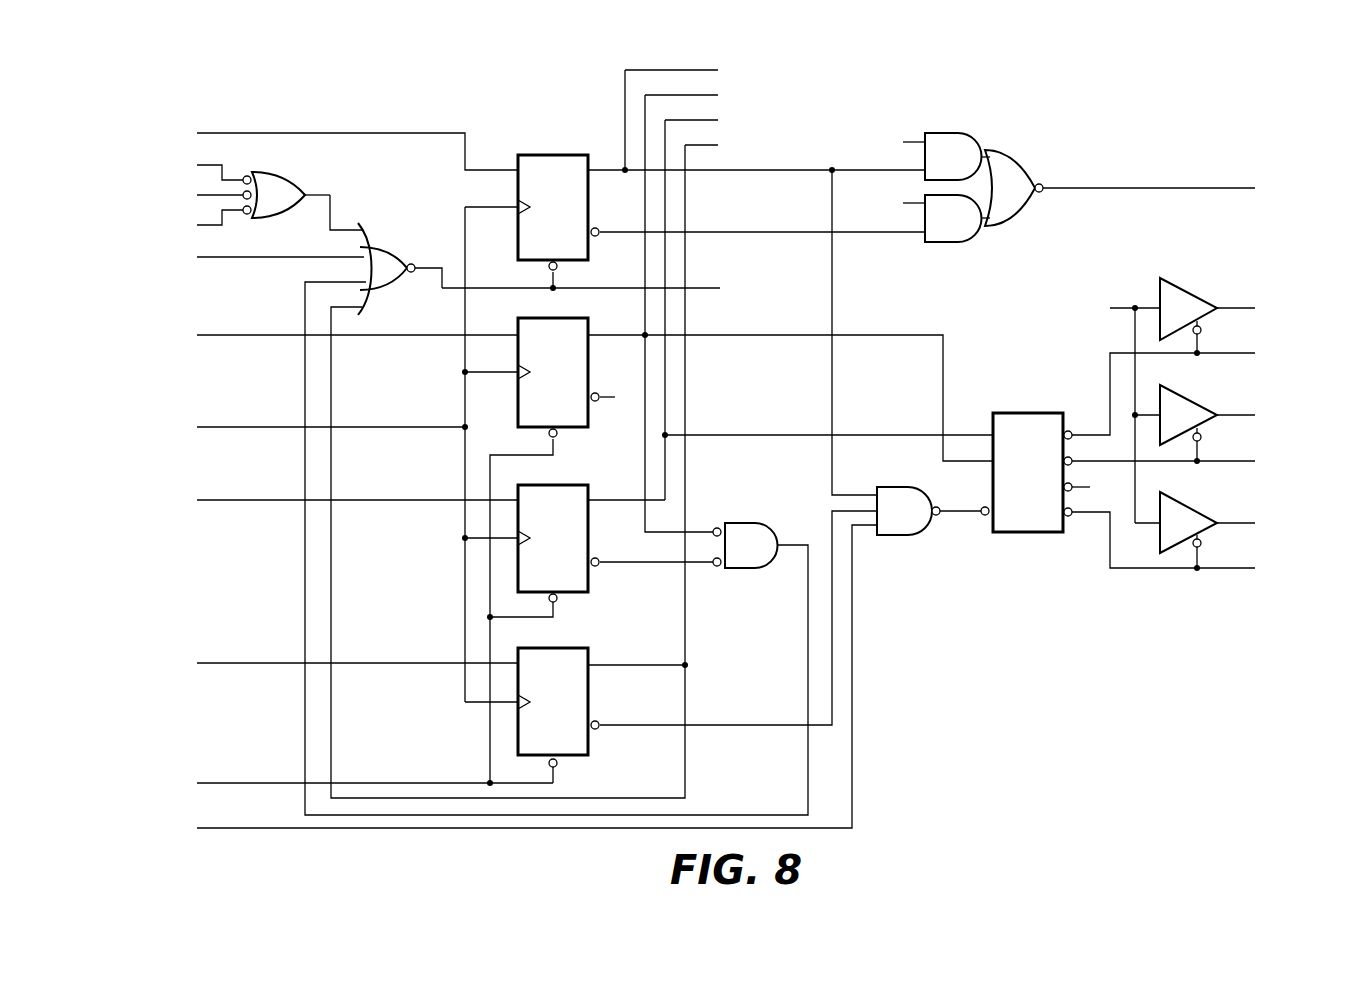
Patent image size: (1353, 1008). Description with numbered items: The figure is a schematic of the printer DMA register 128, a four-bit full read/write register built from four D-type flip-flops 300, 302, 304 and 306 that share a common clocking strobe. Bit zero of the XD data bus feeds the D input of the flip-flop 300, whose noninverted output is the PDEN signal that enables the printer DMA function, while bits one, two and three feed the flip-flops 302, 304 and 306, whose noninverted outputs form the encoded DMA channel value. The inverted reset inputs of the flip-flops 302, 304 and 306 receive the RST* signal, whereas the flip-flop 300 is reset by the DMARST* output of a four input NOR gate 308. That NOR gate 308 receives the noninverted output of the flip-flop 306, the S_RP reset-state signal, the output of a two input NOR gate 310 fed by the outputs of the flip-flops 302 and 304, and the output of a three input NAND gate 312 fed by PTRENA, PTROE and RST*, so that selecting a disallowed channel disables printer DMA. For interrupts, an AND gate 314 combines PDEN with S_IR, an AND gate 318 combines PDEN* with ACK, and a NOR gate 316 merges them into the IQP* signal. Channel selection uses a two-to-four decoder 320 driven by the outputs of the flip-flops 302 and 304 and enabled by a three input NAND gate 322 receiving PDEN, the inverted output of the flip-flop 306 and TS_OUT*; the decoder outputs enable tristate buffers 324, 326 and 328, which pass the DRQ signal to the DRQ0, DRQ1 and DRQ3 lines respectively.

The printer DMA register 128 is at (374, 90).
The D-type flip-flop 300 is at (562, 155).
The D-type flip-flop 302 is at (562, 318).
The D-type flip-flop 304 is at (562, 485).
The D-type flip-flop 306 is at (562, 648).
The four input NOR gate 308 is at (378, 248).
The two input NOR gate 310 is at (748, 523).
The three input NAND gate 312 is at (278, 172).
The two input AND gate 314 is at (958, 134).
The two input NOR gate 316 is at (1005, 164).
The two input AND gate 318 is at (956, 243).
The 2-4 decoder 320 is at (1035, 413).
The three input NAND gate 322 is at (905, 535).
The buffer 324 is at (1183, 288).
The buffer 326 is at (1183, 395).
The buffer 328 is at (1183, 503).